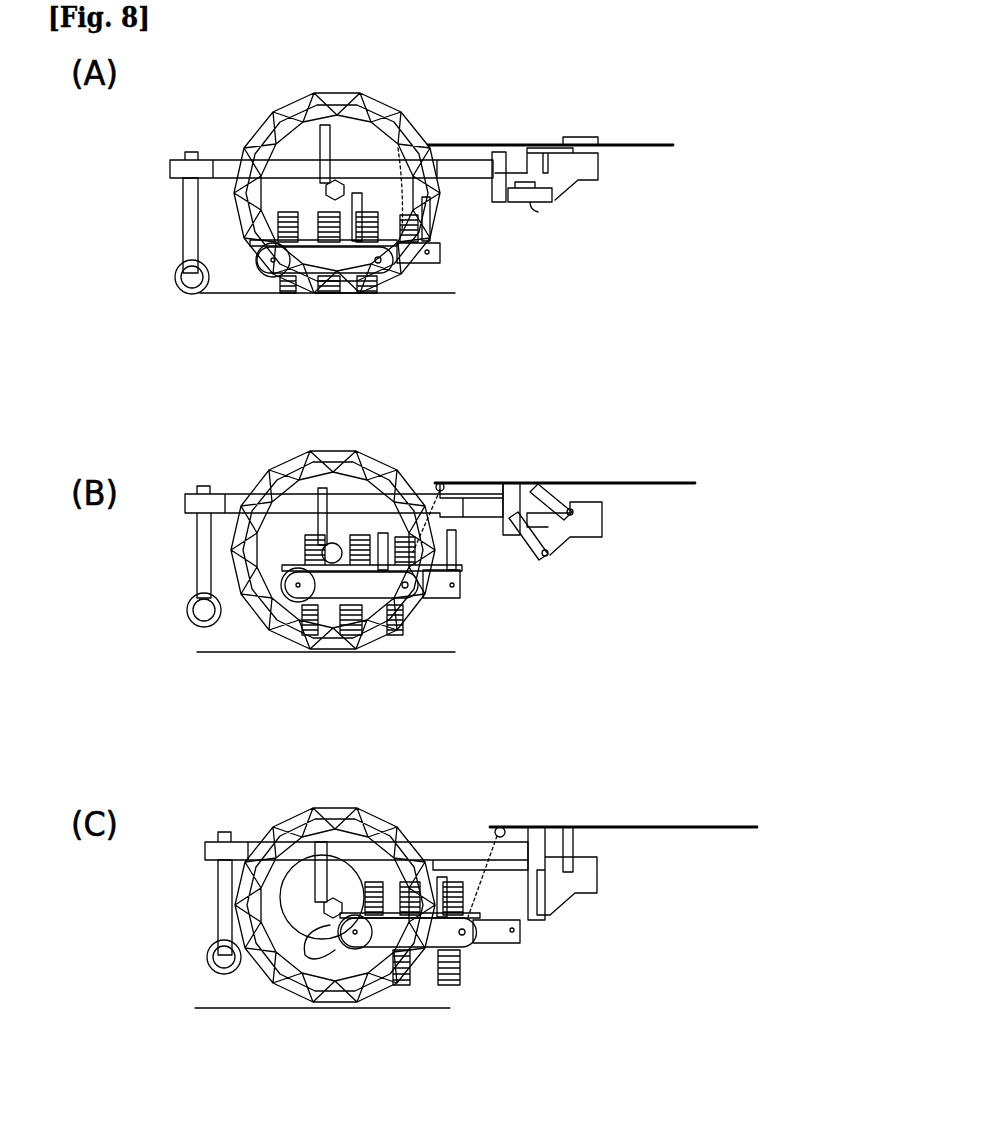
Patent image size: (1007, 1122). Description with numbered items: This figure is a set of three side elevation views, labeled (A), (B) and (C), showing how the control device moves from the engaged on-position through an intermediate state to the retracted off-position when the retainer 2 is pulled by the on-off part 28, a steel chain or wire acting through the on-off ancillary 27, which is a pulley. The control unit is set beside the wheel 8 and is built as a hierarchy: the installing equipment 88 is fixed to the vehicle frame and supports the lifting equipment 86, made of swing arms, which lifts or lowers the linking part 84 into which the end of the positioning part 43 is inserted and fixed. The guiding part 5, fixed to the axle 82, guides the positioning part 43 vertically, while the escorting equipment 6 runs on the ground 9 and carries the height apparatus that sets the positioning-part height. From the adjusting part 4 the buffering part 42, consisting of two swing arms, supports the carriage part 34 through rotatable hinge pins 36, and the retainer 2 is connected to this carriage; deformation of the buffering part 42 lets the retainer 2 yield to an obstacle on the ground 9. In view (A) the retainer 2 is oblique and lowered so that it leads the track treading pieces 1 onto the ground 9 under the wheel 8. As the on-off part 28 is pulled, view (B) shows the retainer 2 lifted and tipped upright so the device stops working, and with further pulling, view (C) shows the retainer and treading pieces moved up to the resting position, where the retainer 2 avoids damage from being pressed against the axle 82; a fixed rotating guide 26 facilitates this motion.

The track treading pieces 1 is at (283, 295).
The retainer 2 is at (345, 292).
The adjusting part 4 is at (470, 842).
The guiding part 5 is at (363, 103).
The escorting equipment 6 is at (180, 270).
The wheel 8 is at (262, 126).
The ground 9 is at (445, 293).
The rotating guide 26 is at (240, 266).
The on-off ancillary 27 is at (438, 482).
The on-off part 28 is at (650, 145).
The carriage part 34 is at (420, 272).
The hinge pins 36 is at (430, 252).
The buffering part 42 is at (460, 568).
The positioning part 43 is at (228, 160).
The axle 82 is at (260, 967).
The linking part 84 is at (510, 172).
The lifting equipment 86 is at (527, 203).
The installing equipment 88 is at (600, 166).